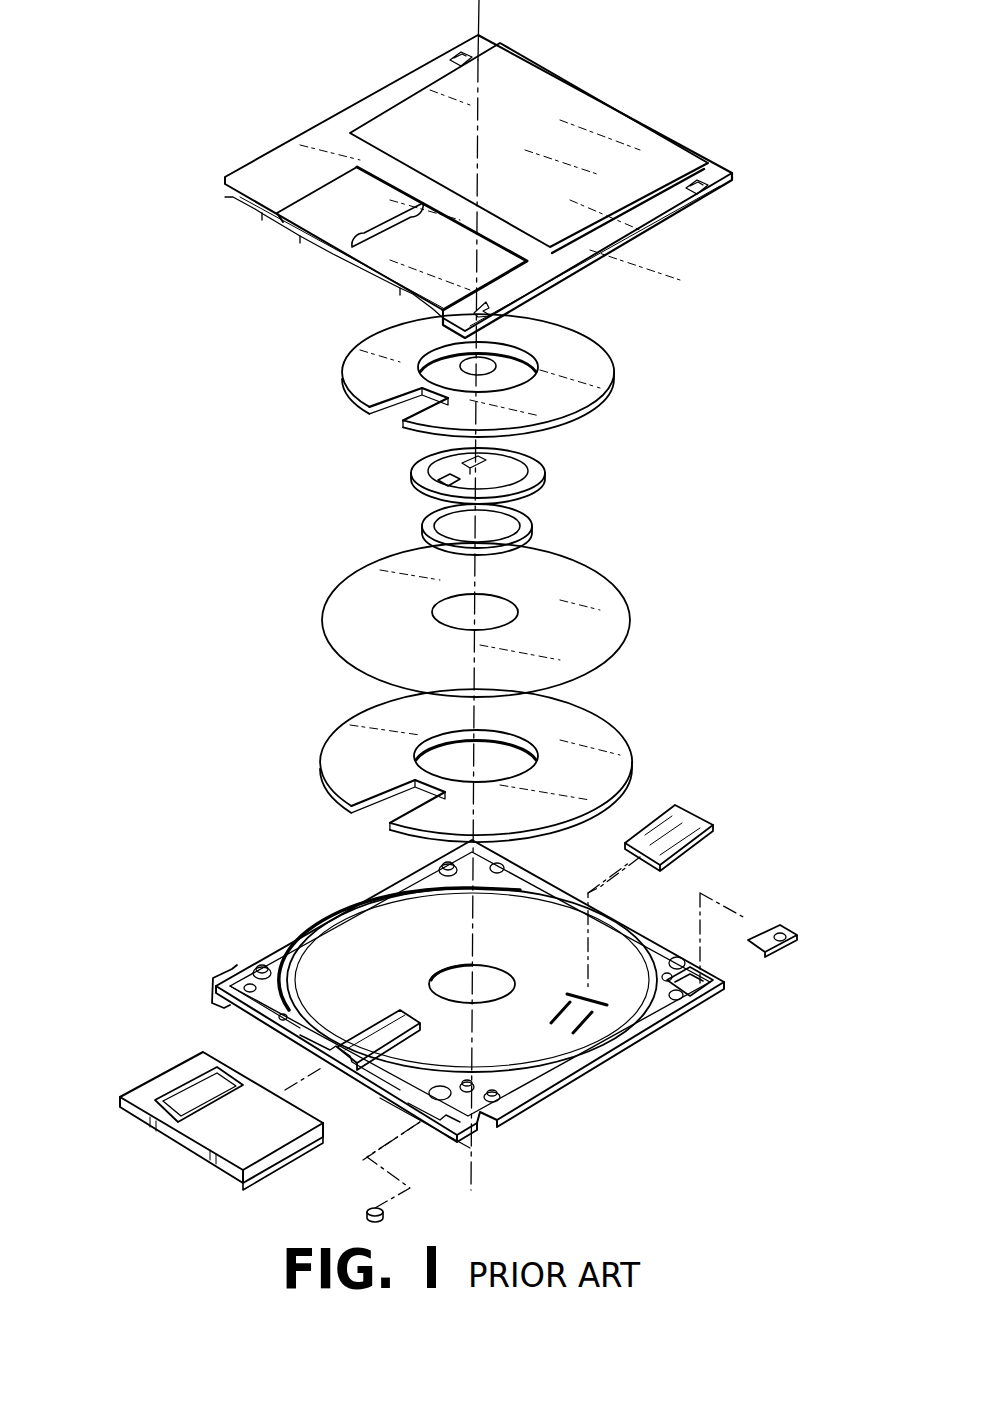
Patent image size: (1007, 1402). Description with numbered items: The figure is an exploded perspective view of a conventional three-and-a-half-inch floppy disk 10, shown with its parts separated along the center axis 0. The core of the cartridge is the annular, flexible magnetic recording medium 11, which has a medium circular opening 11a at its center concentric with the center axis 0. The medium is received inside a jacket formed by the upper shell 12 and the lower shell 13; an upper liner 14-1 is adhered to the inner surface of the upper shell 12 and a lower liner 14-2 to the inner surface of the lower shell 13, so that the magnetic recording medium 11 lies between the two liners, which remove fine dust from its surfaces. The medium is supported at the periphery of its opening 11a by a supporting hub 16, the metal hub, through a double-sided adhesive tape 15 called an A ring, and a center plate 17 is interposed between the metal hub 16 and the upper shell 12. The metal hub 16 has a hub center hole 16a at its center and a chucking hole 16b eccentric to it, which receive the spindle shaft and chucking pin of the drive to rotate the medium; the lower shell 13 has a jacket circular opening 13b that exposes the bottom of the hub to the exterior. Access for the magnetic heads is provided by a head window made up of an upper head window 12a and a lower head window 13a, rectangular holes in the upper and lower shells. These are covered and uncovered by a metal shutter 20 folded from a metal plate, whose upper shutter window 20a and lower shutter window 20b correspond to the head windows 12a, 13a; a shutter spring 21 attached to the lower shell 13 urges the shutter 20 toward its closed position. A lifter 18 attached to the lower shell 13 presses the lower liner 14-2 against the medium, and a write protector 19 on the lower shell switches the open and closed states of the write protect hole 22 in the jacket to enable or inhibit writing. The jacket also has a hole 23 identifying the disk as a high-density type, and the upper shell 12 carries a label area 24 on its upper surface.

The center axis 0 is at (480, 18).
The floppy disk 10 is at (243, 295).
The magnetic recording medium 11 is at (488, 611).
The medium circular opening 11a is at (475, 612).
The upper shell 12 is at (472, 180).
The upper head window 12a is at (380, 228).
The lower shell 13 is at (468, 1003).
The lower head window 13a is at (372, 1030).
The jacket circular opening 13b is at (457, 982).
The upper liner 14-1 is at (521, 362).
The lower liner 14-2 is at (590, 725).
The double-sided adhesive tape 15 is at (540, 522).
The supporting hub 16 is at (483, 468).
The hub center hole 16a is at (430, 468).
The chucking hole 16b is at (434, 489).
The center plate 17 is at (503, 360).
The lifter 18 is at (677, 805).
The write protector 19 is at (742, 985).
The metal shutter 20 is at (209, 1107).
The upper shutter window 20a is at (170, 1097).
The lower shutter window 20b is at (187, 1113).
The shutter spring 21 is at (385, 1215).
The write protect hole 22 is at (700, 196).
The hole 23 is at (444, 54).
The label area 24 is at (650, 156).